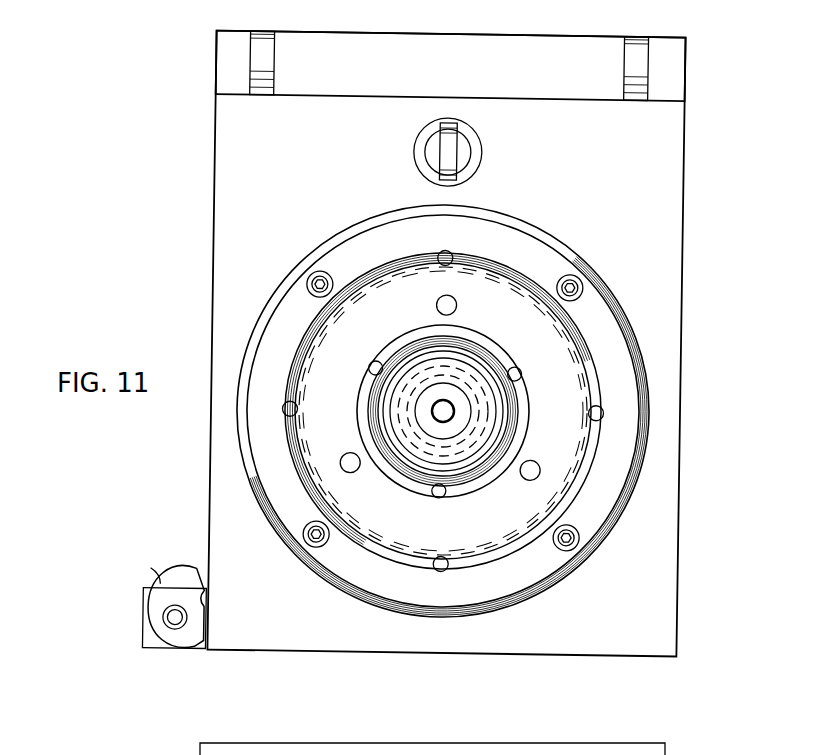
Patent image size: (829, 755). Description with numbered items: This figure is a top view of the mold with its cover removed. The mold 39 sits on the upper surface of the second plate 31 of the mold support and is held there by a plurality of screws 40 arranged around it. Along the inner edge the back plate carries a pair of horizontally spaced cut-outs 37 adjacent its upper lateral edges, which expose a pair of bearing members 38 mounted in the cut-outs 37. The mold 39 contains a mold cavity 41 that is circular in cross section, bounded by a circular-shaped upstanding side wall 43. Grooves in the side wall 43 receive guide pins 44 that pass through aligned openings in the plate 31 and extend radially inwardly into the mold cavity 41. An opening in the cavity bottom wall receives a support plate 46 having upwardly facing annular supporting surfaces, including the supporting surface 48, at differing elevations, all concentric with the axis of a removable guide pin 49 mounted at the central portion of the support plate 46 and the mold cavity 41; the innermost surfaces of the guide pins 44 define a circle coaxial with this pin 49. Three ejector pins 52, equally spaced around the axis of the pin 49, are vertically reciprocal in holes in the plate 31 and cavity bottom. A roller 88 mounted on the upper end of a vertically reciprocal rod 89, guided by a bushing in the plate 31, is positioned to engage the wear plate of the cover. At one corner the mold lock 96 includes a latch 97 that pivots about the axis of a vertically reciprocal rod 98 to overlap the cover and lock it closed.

The second plate 31 is at (655, 621).
The cut-outs 37 is at (219, 66).
The bearing members 38 is at (257, 44).
The mold 39 is at (646, 357).
The screws 40 is at (578, 548).
The mold cavity 41 is at (560, 445).
The upstanding side wall 43 is at (560, 340).
The guide pins 44 is at (588, 411).
The support plate 46 is at (366, 420).
The annular supporting surface 48 is at (413, 461).
The removable guide pin 49 is at (445, 410).
The ejector pins 52 is at (435, 306).
The roller 88 is at (452, 150).
The vertically reciprocal rod 89 is at (462, 160).
The mold lock 96 is at (151, 571).
The latch 97 is at (189, 573).
The vertically reciprocal rod 98 is at (172, 616).